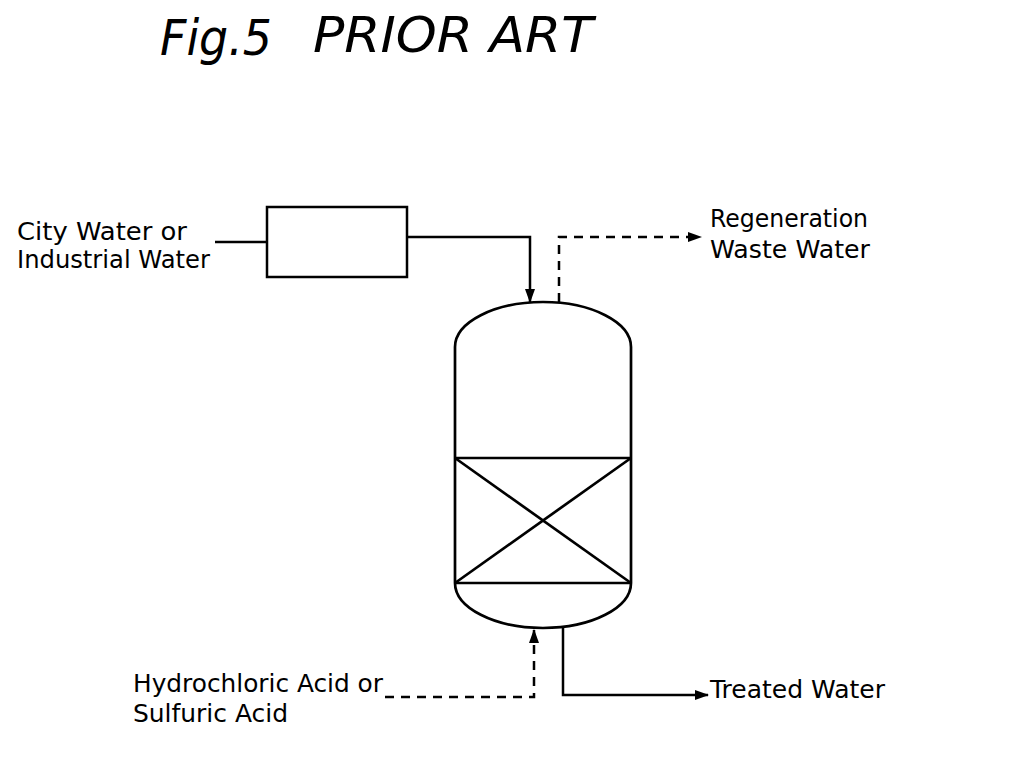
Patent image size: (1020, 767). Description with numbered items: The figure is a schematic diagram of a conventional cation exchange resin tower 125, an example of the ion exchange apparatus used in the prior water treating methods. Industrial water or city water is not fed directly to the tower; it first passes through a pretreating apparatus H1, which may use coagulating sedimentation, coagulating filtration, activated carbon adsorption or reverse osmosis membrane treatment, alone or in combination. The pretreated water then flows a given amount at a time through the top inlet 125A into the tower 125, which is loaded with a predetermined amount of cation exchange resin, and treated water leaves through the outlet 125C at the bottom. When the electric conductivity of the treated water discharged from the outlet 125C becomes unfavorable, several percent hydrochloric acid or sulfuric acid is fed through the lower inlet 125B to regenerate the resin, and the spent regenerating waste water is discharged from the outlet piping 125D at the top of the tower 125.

The pretreating apparatus H1 is at (337, 207).
The cation exchange resin tower 125 is at (648, 419).
The top inlet 125A is at (528, 278).
The lower inlet 125B is at (532, 668).
The outlet 125C is at (566, 650).
The outlet piping 125D is at (562, 266).